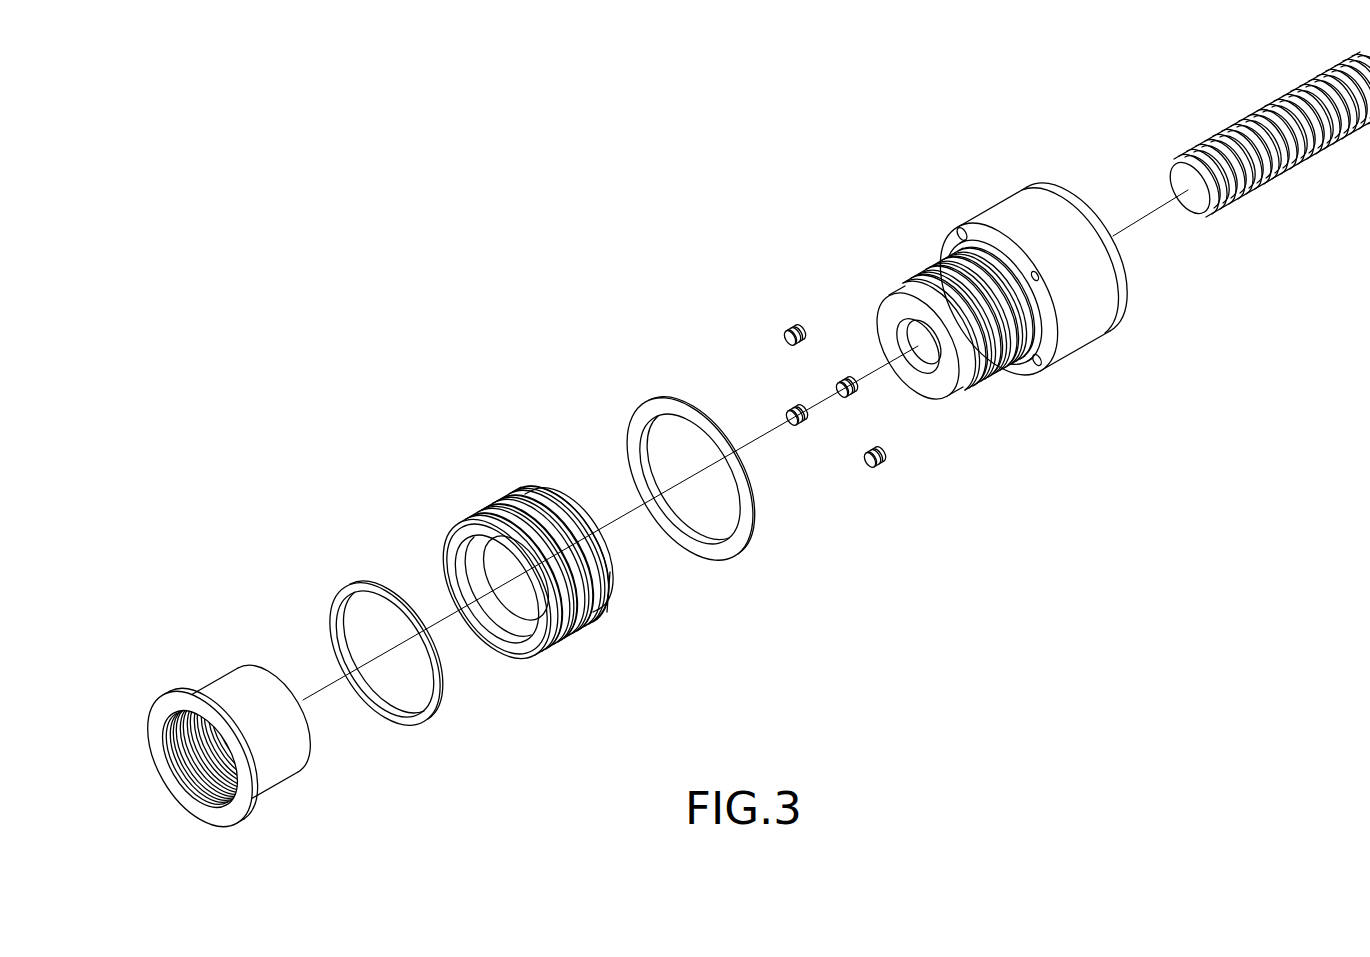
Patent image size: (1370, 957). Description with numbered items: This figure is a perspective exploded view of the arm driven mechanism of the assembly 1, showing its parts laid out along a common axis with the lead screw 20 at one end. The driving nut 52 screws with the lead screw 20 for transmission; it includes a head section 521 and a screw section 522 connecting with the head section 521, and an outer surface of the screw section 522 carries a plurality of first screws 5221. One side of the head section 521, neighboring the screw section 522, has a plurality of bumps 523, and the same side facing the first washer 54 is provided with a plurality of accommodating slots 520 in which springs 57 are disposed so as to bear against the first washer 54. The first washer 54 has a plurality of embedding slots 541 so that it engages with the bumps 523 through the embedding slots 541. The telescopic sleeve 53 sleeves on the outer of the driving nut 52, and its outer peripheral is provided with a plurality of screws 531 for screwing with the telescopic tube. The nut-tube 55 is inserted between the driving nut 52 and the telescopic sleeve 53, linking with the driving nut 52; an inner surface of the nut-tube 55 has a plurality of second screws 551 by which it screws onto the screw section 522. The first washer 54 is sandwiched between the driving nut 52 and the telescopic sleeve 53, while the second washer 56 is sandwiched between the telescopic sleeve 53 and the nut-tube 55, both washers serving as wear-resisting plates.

The connector assembly 1 is at (510, 232).
The lead screw 20 is at (1263, 170).
The driving nut 52 is at (1058, 298).
The accommodating slots 520 is at (963, 233).
The head section 521 is at (1102, 325).
The screw section 522 is at (948, 366).
The first screws 5221 is at (945, 398).
The bumps 523 is at (993, 248).
The telescopic sleeve 53 is at (564, 543).
The screws 531 is at (573, 600).
The first washer 54 is at (696, 478).
The embedding slots 541 is at (737, 547).
The nut-tube 55 is at (218, 722).
The second screws 551 is at (183, 787).
The second washer 56 is at (343, 598).
The springs 57 is at (792, 323).